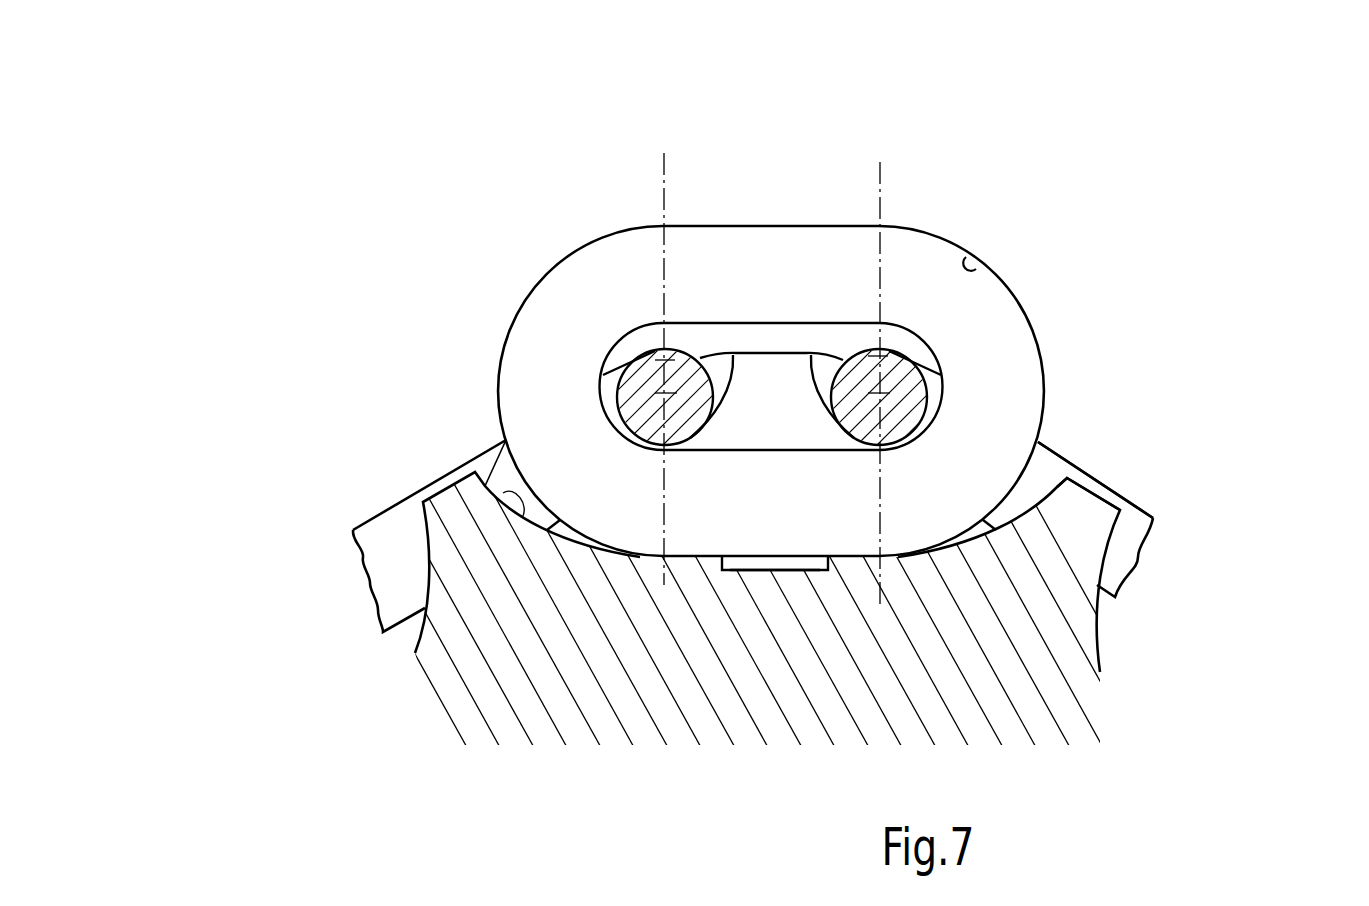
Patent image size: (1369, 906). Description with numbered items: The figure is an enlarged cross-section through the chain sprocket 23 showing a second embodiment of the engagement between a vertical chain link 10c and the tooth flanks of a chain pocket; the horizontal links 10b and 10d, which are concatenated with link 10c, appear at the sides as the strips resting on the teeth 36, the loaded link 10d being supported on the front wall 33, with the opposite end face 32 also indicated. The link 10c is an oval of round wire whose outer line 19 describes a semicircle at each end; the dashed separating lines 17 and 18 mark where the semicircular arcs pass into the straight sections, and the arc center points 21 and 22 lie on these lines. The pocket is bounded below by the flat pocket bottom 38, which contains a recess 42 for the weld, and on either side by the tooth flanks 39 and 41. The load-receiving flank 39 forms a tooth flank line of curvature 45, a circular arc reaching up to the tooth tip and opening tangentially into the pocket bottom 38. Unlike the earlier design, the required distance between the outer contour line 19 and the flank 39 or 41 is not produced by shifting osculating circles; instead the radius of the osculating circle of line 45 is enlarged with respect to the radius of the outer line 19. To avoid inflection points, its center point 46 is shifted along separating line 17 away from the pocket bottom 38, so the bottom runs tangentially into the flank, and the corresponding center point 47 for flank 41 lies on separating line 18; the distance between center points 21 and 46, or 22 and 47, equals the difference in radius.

The horizontal chain link 10b is at (386, 514).
The vertical chain link 10c is at (761, 220).
The chain link 10d is at (1057, 458).
The dashed line 17 is at (663, 185).
The dashed line 18 is at (882, 192).
The outer line 19 is at (983, 268).
The center point 21 is at (672, 380).
The center point 22 is at (880, 385).
The chain sprocket 23 is at (975, 682).
The end face 32 is at (714, 372).
The front wall 33 is at (822, 372).
The tooth 36 is at (448, 492).
The pocket bottom 38 is at (700, 556).
The tooth flank 39 is at (484, 478).
The tooth flank 41 is at (1068, 478).
The recess 42 is at (778, 565).
The tooth flank line of curvature 45 is at (522, 518).
The center point 46 is at (658, 362).
The curvature center point 47 is at (882, 366).